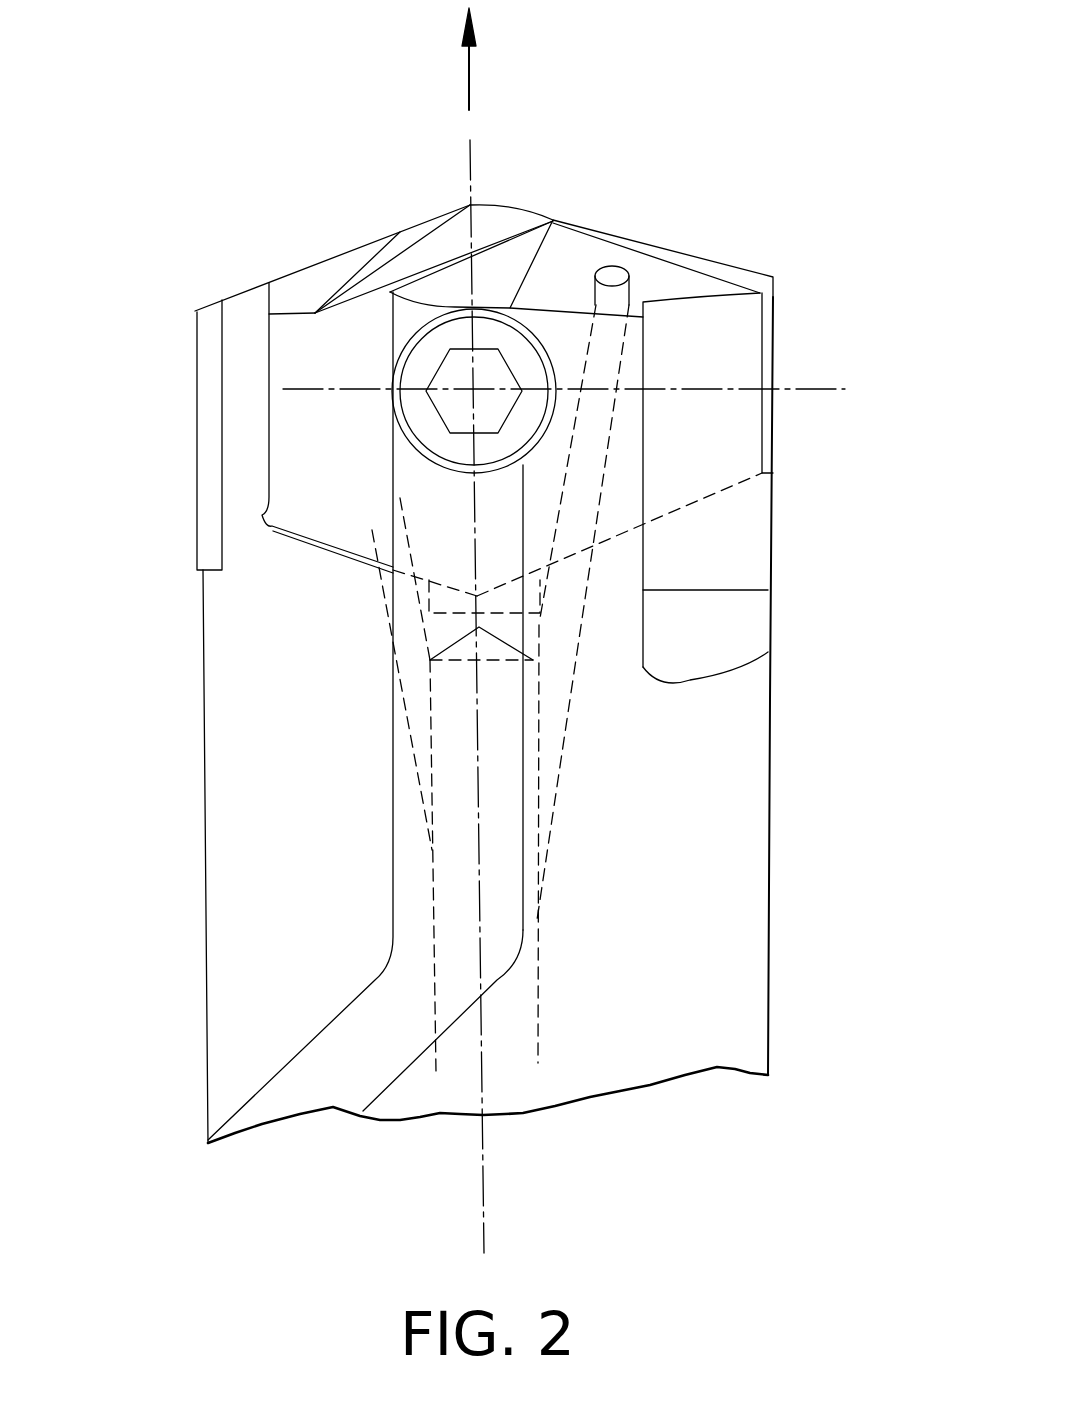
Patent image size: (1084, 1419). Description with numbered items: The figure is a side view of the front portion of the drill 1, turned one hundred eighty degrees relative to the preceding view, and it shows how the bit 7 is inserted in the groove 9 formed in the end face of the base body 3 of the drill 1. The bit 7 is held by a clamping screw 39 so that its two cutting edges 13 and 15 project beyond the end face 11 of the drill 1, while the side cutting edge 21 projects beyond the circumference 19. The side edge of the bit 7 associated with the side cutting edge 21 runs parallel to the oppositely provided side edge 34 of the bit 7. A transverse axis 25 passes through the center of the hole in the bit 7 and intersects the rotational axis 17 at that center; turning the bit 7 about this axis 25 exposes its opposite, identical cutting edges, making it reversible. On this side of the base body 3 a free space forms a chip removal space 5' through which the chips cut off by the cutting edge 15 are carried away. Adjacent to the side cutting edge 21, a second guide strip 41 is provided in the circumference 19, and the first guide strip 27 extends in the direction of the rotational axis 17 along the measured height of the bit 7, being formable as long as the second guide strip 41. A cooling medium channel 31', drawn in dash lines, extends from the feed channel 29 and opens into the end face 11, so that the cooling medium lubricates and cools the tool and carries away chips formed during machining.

The drill 1 is at (862, 398).
The base body 3 is at (728, 885).
The chip removal space 5' is at (324, 717).
The bit 7 is at (302, 340).
The groove 9 is at (615, 540).
The end face 11 is at (557, 232).
The cutting edge 13 is at (500, 205).
The cutting edge 15 is at (432, 213).
The rotational axis 17 is at (485, 1200).
The circumference 19 is at (772, 770).
The side cutting edge 21 is at (773, 278).
The transverse axis 25 is at (808, 383).
The first guide strip 27 is at (213, 535).
The feed channel 29 is at (478, 891).
The cooling medium channel 31' is at (650, 539).
The side edge 34 is at (270, 447).
The clamping screw 39 is at (530, 352).
The second guide strip 41 is at (743, 338).